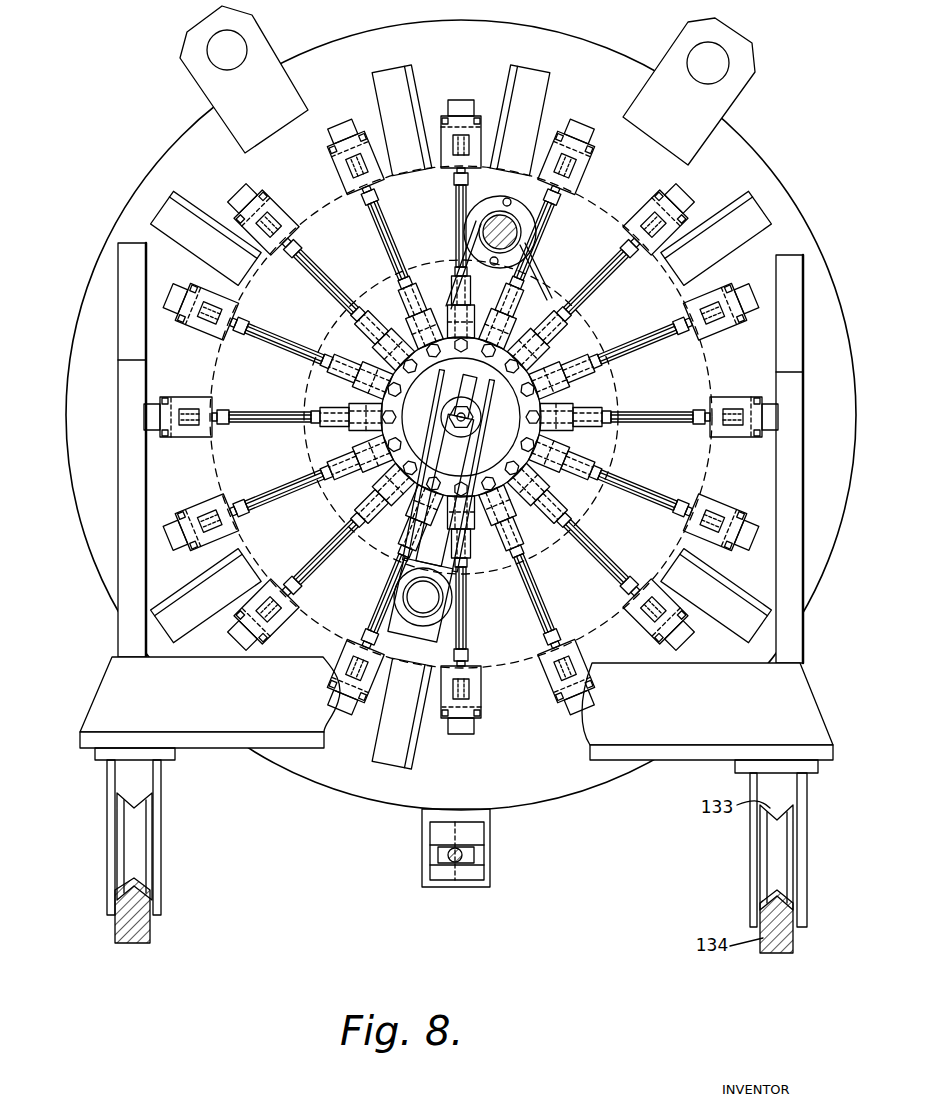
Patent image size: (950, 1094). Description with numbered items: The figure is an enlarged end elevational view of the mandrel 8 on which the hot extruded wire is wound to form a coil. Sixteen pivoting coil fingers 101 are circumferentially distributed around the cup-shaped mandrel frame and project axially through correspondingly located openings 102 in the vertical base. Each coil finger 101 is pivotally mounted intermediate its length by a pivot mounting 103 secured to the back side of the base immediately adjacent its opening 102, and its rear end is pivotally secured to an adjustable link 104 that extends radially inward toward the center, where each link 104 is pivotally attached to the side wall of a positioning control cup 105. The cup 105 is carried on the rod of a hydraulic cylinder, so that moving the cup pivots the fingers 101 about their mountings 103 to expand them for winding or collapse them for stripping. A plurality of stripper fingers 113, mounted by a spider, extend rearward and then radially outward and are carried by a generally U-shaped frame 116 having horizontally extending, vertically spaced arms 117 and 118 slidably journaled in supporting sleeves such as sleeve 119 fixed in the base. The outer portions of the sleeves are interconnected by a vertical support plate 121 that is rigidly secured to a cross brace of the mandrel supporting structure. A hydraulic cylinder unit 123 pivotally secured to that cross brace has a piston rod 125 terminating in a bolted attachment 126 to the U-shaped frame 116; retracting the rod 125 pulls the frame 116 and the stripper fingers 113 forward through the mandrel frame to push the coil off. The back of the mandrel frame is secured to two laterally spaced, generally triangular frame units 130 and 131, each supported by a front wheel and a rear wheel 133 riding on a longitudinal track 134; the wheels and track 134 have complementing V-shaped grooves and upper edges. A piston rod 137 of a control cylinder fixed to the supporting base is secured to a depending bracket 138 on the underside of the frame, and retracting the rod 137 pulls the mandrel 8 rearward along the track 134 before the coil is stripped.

The mandrel 8 is at (386, 20).
The coil finger 101 is at (488, 118).
The opening 102 is at (242, 195).
The pivot mounting 103 is at (348, 175).
The adjustable link 104 is at (594, 280).
The positioning control cup 105 is at (558, 400).
The stripper finger 113 is at (520, 72).
The U-shaped frame 116 is at (406, 524).
The arm 117 is at (503, 222).
The arm 118 is at (415, 597).
The supporting sleeve 119 is at (523, 236).
The vertical support plate 121 is at (433, 425).
The hydraulic cylinder unit 123 is at (448, 404).
The piston rod 125 is at (469, 430).
The bolted attachment 126 is at (474, 419).
The frame unit 130 is at (118, 602).
The frame unit 131 is at (803, 572).
The rear wheel 133 is at (140, 796).
The track 134 is at (148, 938).
The piston rod 137 is at (463, 858).
The bracket 138 is at (450, 840).